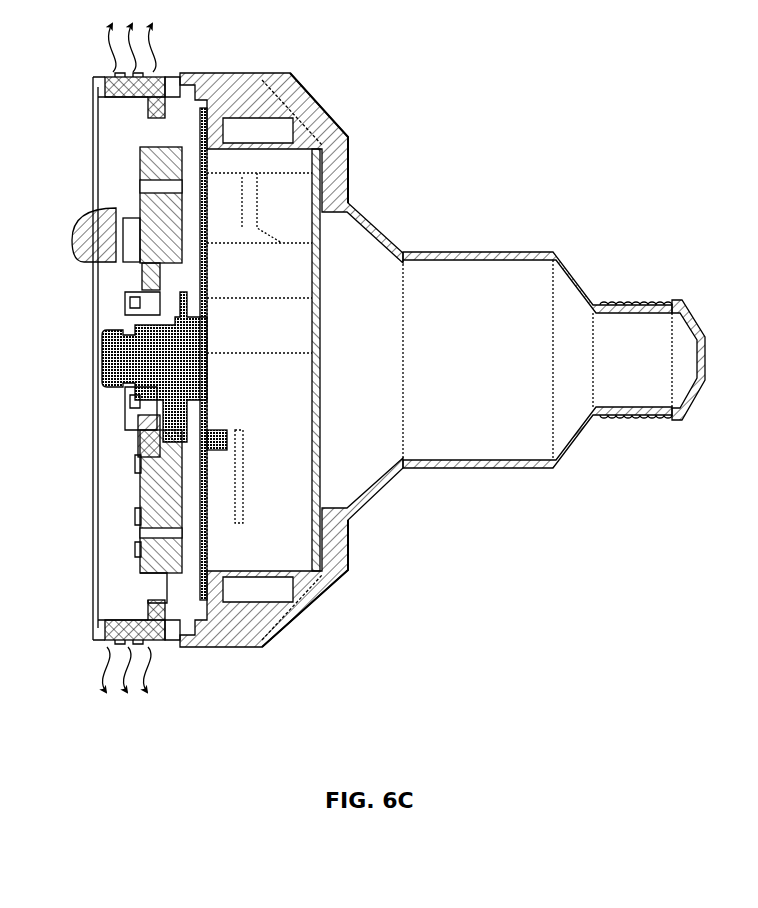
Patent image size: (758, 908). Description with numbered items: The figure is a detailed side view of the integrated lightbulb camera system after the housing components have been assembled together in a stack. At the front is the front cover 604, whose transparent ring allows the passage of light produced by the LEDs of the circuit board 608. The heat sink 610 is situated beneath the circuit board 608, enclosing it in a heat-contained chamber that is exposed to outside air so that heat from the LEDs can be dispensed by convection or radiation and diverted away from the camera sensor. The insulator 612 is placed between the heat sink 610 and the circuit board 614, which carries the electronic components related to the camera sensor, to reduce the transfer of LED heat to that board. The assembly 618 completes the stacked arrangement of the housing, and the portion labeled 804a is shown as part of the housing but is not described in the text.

The front cover 604 is at (92, 462).
The circuit board 608 is at (140, 200).
The heat sink 610 is at (102, 77).
The insulator 612 is at (212, 73).
The housing chamfered portion 804a is at (327, 112).
The assembly 618 is at (497, 252).
The circuit board 614 is at (207, 390).